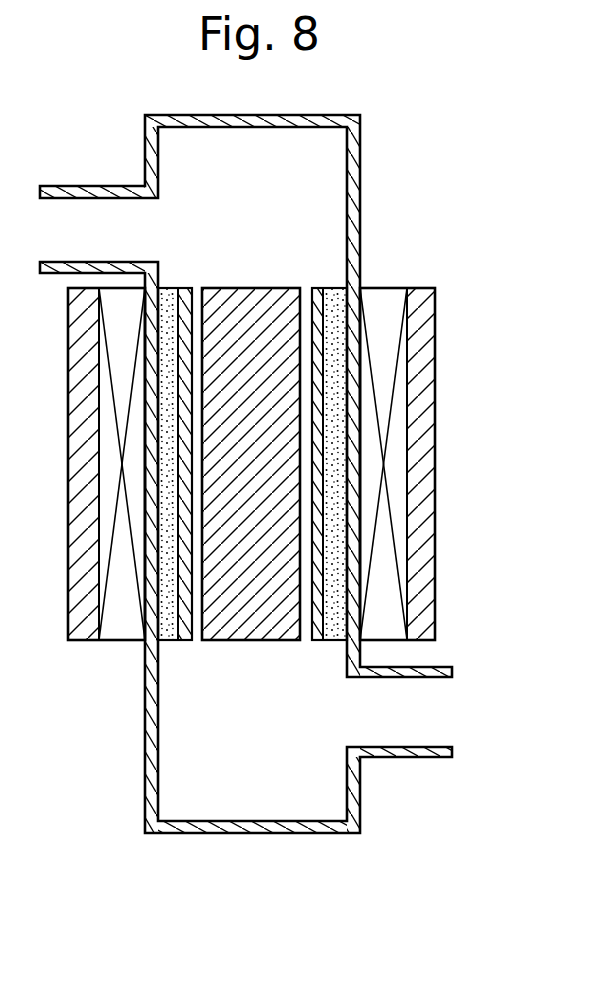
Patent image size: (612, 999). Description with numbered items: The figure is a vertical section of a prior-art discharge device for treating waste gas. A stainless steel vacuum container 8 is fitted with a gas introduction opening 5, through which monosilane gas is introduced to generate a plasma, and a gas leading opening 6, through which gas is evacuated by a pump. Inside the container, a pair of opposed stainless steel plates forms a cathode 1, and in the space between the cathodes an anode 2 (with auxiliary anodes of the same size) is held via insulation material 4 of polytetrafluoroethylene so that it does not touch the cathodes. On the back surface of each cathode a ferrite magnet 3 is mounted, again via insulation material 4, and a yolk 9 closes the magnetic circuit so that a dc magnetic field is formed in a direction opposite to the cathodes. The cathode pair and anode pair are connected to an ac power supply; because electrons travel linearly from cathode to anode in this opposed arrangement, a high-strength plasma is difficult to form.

The cathode 1 is at (184, 644).
The anode 2 is at (248, 637).
The ferrite magnet 3 is at (123, 632).
The insulation material 4 is at (165, 297).
The gas introduction opening 5 is at (65, 225).
The gas leading opening 6 is at (430, 713).
The vacuum container 8 is at (356, 170).
The yolk 9 is at (425, 297).